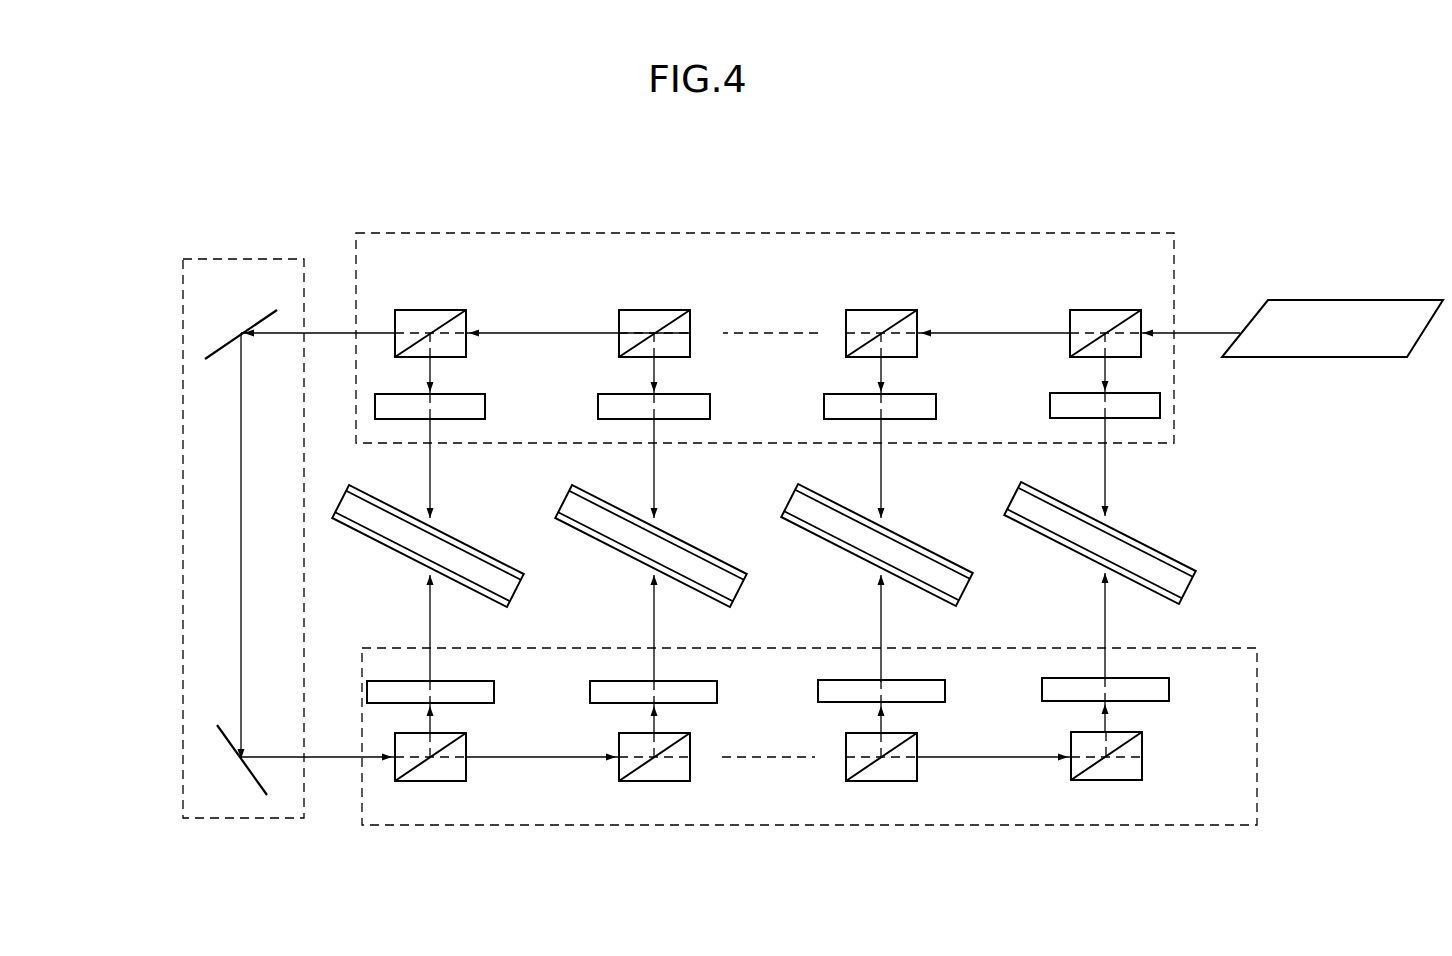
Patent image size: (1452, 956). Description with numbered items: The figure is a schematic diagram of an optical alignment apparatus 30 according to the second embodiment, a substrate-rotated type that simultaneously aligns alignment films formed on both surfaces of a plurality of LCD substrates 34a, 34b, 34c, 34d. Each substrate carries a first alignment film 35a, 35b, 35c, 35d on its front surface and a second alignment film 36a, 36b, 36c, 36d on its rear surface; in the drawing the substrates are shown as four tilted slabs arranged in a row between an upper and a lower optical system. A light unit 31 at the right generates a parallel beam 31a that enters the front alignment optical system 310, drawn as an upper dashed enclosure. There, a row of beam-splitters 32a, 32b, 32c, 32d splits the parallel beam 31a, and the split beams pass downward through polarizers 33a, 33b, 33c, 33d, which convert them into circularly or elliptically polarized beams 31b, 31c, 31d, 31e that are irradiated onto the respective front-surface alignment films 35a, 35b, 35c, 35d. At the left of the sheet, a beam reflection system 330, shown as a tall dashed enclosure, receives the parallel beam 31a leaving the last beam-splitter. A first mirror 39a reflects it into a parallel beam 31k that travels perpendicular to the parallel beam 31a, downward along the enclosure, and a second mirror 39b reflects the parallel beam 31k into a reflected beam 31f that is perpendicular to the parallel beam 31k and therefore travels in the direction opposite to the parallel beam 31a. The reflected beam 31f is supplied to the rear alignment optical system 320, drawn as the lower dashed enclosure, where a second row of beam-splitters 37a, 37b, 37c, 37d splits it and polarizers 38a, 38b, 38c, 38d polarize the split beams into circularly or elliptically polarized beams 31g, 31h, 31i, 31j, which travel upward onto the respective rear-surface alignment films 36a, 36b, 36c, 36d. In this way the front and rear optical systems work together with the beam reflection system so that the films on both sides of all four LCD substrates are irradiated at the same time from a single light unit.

The optical alignment apparatus 30 is at (824, 202).
The light unit 31 is at (1348, 309).
The parallel beam 31a is at (332, 334).
The polarized beam 31b is at (431, 473).
The polarized beam 31c is at (655, 473).
The polarized beam 31d is at (882, 471).
The polarized beam 31e is at (1106, 471).
The reflected parallel beam 31f is at (320, 757).
The polarized beam 31g is at (431, 663).
The polarized beam 31h is at (655, 662).
The polarized beam 31i is at (882, 661).
The polarized beam 31j is at (1106, 659).
The parallel beam 31k is at (241, 478).
The beam-splitter 32a is at (430, 310).
The beam-splitter 32b is at (654, 310).
The beam-splitter 32c is at (881, 310).
The beam-splitter 32d is at (1105, 310).
The polarizer 33a is at (485, 405).
The polarizer 33b is at (710, 405).
The polarizer 33c is at (936, 405).
The polarizer 33d is at (1160, 404).
The LCD substrate 34a is at (525, 585).
The LCD substrate 34b is at (748, 585).
The LCD substrate 34c is at (963, 583).
The LCD substrate 34d is at (1187, 581).
The alignment film 35a is at (504, 557).
The alignment film 35b is at (727, 557).
The alignment film 35c is at (950, 556).
The alignment film 35d is at (1173, 555).
The alignment film 36a is at (505, 605).
The alignment film 36b is at (728, 605).
The alignment film 36c is at (946, 603).
The alignment film 36d is at (1170, 601).
The beam-splitter 37a is at (466, 775).
The beam-splitter 37b is at (690, 775).
The beam-splitter 37c is at (917, 773).
The beam-splitter 37d is at (1142, 772).
The polarizer 38a is at (494, 690).
The polarizer 38b is at (717, 690).
The polarizer 38c is at (945, 688).
The polarizer 38d is at (1169, 686).
The first mirror 39a is at (241, 330).
The second mirror 39b is at (228, 760).
The front alignment optical system 310 is at (876, 234).
The rear alignment optical system 320 is at (1250, 770).
The beam reflection system 330 is at (246, 258).